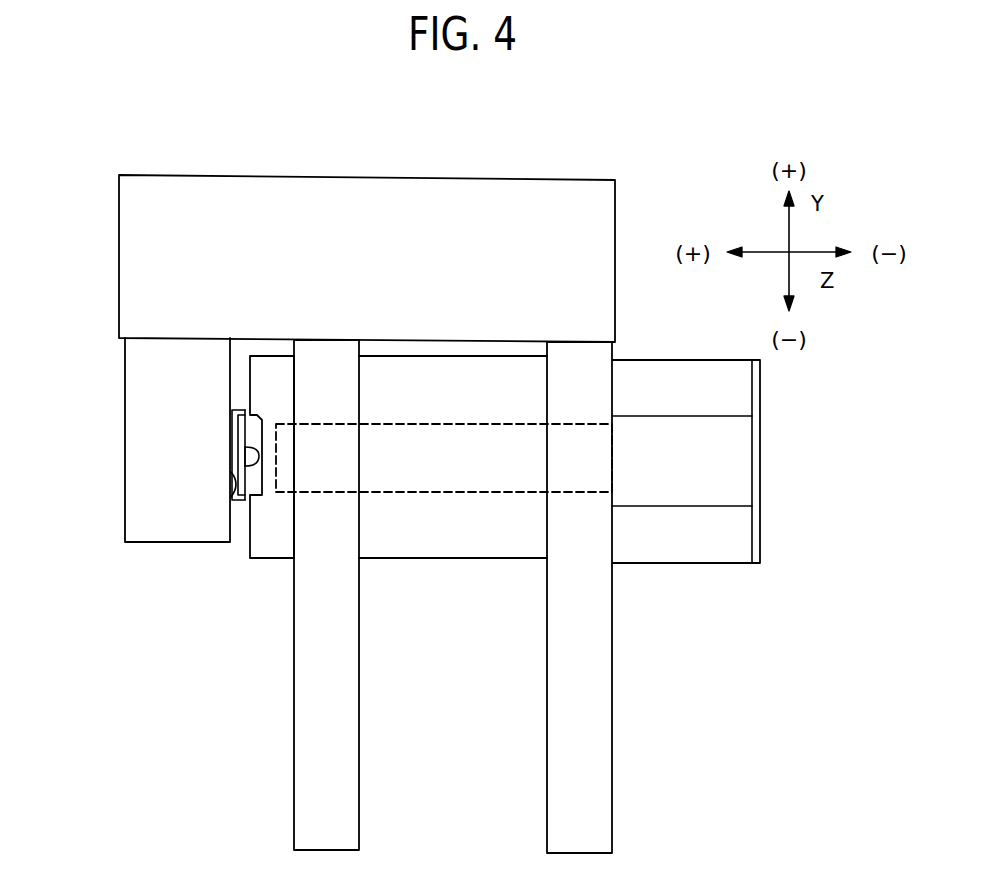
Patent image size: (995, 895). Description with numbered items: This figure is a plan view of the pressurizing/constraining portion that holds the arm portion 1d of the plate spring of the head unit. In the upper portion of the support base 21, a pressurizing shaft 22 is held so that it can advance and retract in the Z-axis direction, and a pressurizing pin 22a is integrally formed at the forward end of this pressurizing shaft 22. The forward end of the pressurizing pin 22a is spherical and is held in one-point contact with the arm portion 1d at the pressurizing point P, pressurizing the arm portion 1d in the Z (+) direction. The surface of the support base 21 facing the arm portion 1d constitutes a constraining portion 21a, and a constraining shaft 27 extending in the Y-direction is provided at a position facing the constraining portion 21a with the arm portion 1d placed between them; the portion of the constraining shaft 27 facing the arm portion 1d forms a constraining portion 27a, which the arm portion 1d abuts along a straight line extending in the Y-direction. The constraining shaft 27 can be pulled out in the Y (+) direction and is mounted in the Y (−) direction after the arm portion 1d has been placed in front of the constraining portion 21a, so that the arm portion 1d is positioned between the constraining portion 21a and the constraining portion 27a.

The arm portion 1d is at (238, 421).
The pressurizing point P is at (246, 456).
The constraining shaft 27 is at (138, 506).
The constraining portion 27a is at (232, 496).
The support base 21 is at (448, 548).
The constraining portion 21a is at (248, 542).
The pressurizing shaft 22 is at (415, 492).
The pressurizing pin 22a is at (250, 458).